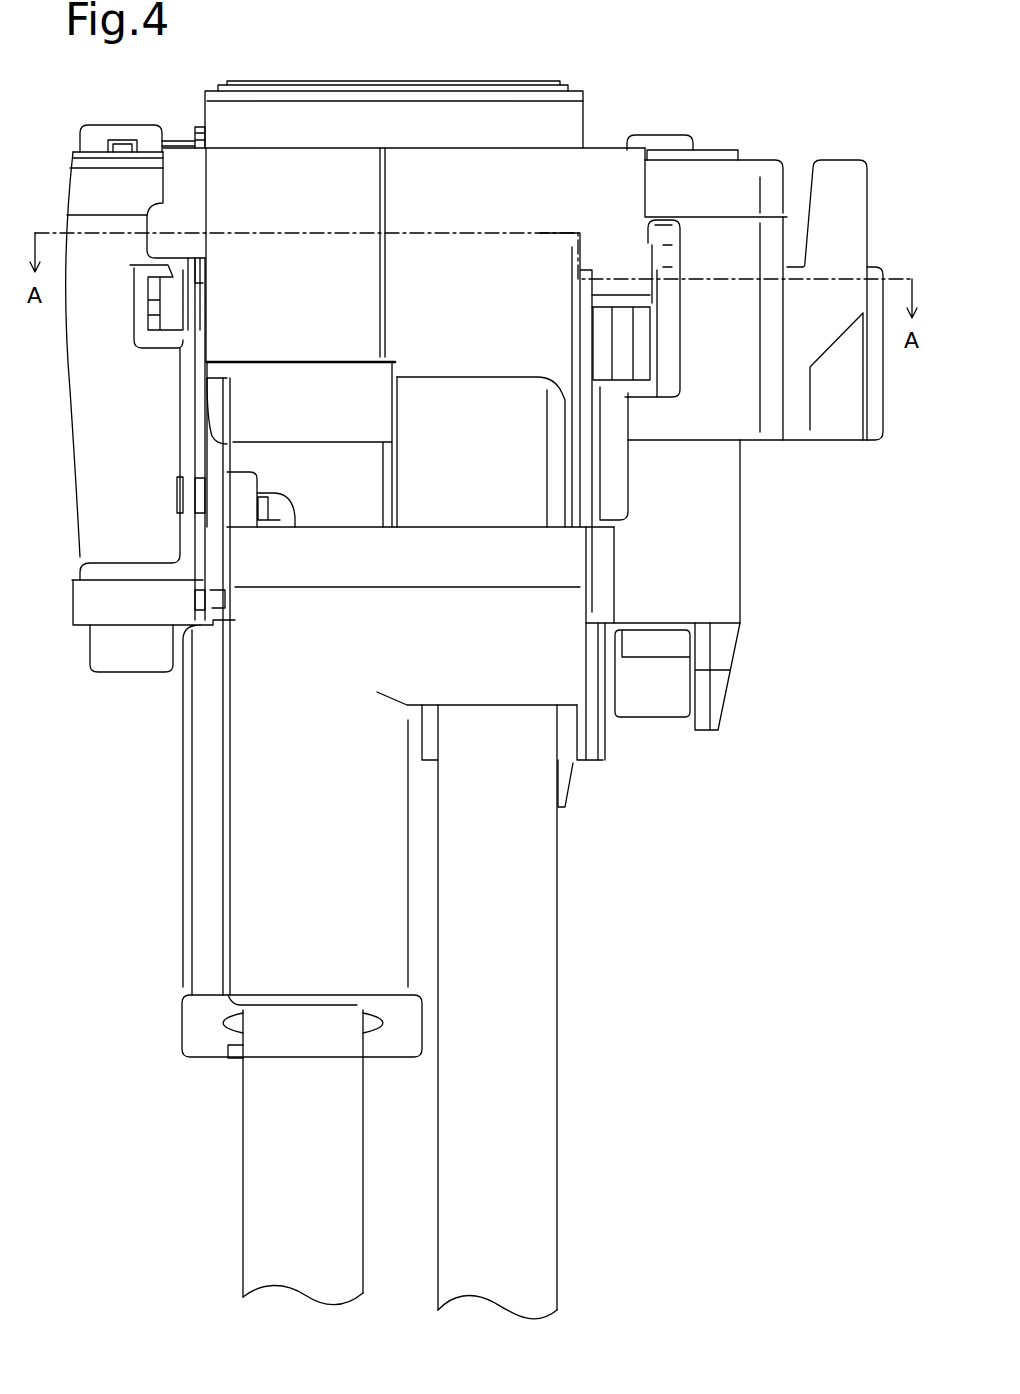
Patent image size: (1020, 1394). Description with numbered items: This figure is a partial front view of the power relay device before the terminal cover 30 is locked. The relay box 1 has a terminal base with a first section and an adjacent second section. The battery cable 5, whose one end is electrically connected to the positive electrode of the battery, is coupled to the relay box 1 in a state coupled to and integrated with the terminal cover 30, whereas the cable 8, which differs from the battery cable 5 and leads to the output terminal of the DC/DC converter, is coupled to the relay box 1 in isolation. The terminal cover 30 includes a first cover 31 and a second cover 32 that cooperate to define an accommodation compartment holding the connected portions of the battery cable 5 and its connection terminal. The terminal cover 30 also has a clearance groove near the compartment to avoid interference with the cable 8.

The relay box 1 is at (712, 150).
The battery cable 5 is at (243, 1178).
The cable 8 is at (560, 1013).
The terminal cover 30 is at (534, 89).
The first cover 31 is at (215, 458).
The second cover 32 is at (197, 897).